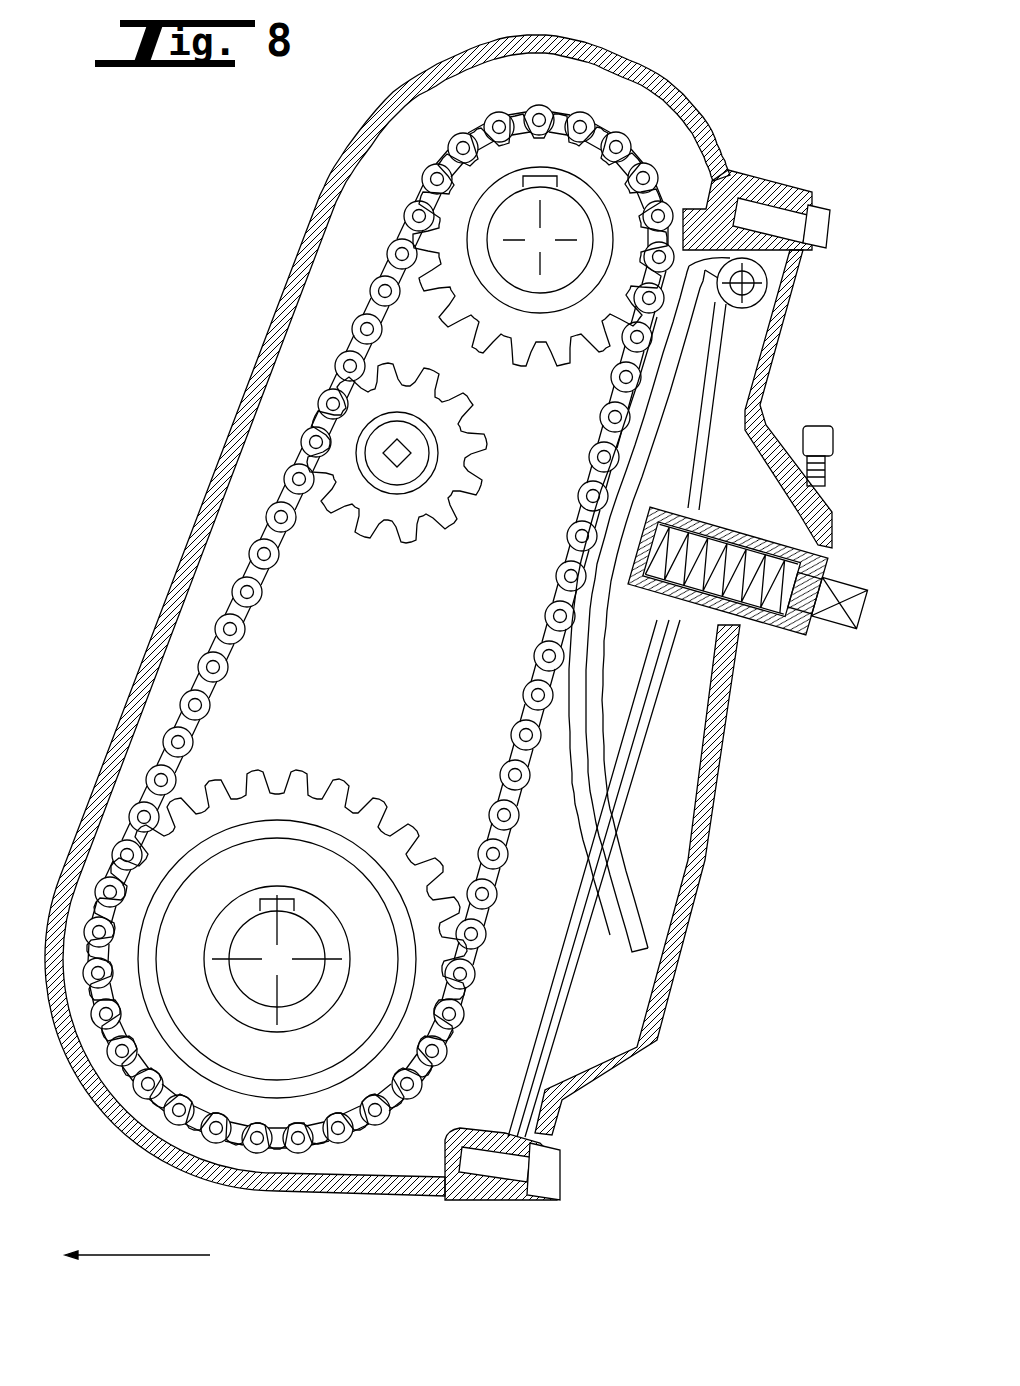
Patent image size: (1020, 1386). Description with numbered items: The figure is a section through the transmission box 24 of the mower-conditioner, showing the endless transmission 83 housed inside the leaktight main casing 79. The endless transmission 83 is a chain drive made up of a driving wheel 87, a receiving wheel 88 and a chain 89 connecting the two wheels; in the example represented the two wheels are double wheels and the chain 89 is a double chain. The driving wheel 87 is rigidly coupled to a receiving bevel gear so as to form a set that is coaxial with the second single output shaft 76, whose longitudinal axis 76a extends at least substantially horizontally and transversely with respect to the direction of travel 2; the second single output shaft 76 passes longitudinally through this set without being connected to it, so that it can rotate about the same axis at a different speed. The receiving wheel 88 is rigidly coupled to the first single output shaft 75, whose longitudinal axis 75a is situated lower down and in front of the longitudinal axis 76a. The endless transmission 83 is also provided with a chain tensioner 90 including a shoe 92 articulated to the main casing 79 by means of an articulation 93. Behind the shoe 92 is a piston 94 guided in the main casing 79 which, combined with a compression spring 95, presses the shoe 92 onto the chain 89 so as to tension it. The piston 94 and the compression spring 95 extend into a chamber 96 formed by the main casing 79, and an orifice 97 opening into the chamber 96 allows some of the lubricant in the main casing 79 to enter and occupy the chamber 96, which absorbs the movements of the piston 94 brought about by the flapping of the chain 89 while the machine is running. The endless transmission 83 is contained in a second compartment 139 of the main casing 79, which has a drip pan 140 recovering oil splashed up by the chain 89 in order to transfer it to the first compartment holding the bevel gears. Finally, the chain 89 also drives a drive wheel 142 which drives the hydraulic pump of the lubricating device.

The direction of travel 2 is at (119, 1252).
The transmission box 24 is at (439, 615).
The first single output shaft 75 is at (191, 1003).
The longitudinal axis of the first single output shaft 75a is at (275, 955).
The second single output shaft 76 is at (435, 156).
The longitudinal axis of the second single output shaft 76a is at (537, 237).
The main casing 79 is at (250, 432).
The endless transmission 83 is at (208, 632).
The driving wheel 87 is at (446, 183).
The receiving wheel 88 is at (249, 996).
The chain 89 is at (359, 629).
The chain tensioner 90 is at (686, 620).
The shoe 92 is at (640, 893).
The articulation 93 is at (748, 300).
The piston 94 is at (606, 612).
The compression spring 95 is at (833, 585).
The chamber 96 is at (713, 637).
The orifice 97 is at (758, 558).
The second compartment 139 is at (417, 705).
The drip pan 140 is at (727, 162).
The drive wheel 142 is at (387, 507).